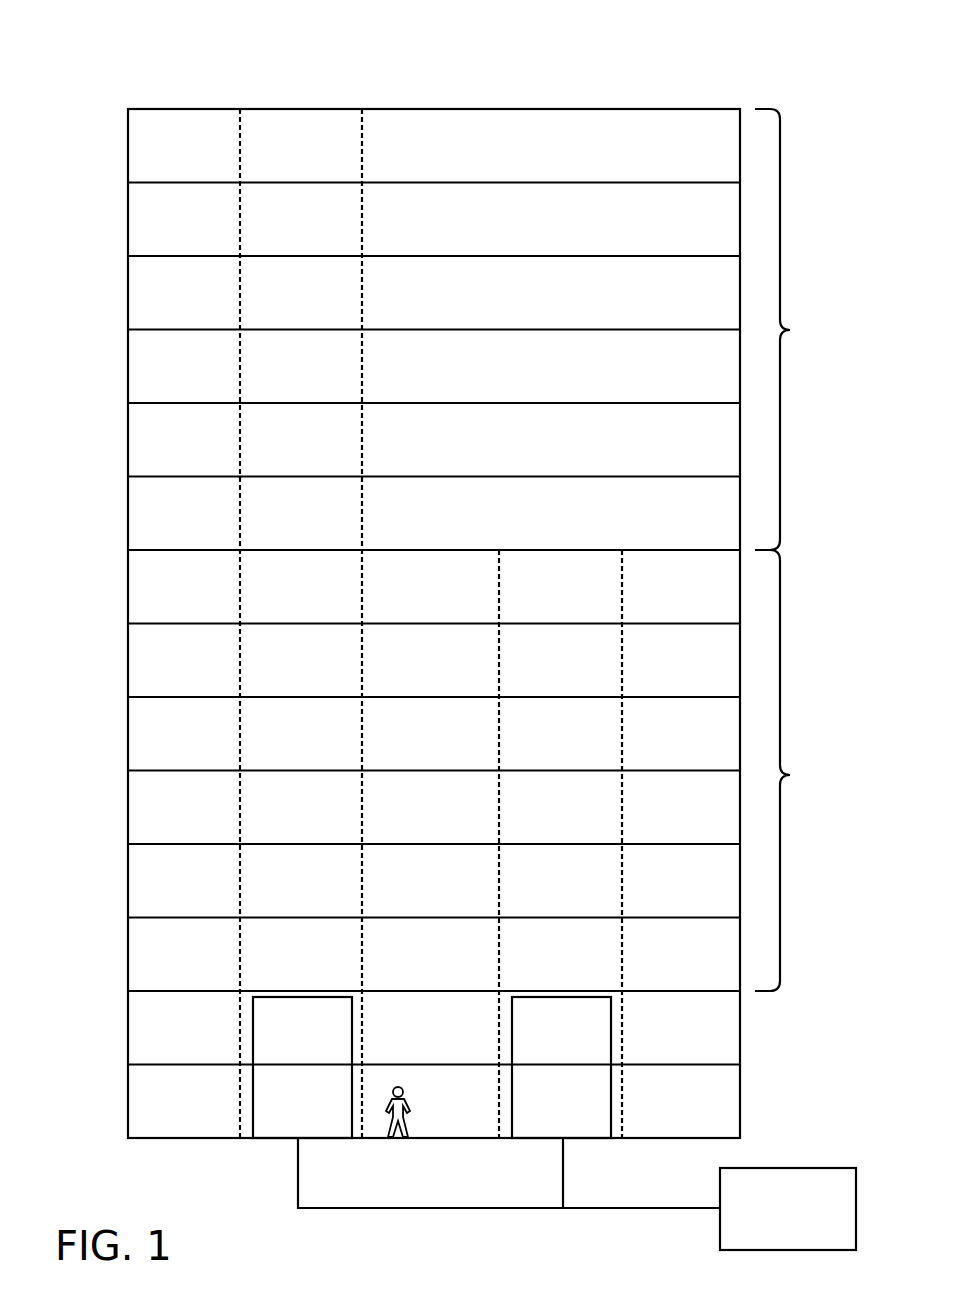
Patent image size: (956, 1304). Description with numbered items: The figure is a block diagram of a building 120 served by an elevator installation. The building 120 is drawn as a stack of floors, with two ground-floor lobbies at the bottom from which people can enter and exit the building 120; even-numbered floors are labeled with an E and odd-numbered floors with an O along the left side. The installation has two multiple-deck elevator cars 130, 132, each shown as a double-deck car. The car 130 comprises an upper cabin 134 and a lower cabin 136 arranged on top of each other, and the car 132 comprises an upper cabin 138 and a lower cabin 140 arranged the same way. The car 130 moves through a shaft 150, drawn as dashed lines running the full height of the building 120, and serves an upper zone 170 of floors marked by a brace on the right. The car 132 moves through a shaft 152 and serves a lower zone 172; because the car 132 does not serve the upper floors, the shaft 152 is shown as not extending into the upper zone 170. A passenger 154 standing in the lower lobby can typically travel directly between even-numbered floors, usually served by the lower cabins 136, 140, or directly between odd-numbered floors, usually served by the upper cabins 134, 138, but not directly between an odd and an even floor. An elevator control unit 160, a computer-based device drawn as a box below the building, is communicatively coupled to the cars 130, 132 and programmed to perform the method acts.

The building 120 is at (166, 66).
The multiple-deck elevator car 130 is at (253, 1050).
The multiple-deck elevator car 132 is at (512, 1050).
The upper cabin 134 is at (280, 1012).
The lower cabin 136 is at (268, 1116).
The upper cabin 138 is at (543, 1012).
The lower cabin 140 is at (527, 1098).
The shaft 150 is at (363, 300).
The shaft 152 is at (499, 600).
The passenger 154 is at (405, 1100).
The elevator control unit 160 is at (770, 1168).
The upper zone 170 is at (809, 329).
The lower zone 172 is at (813, 770).